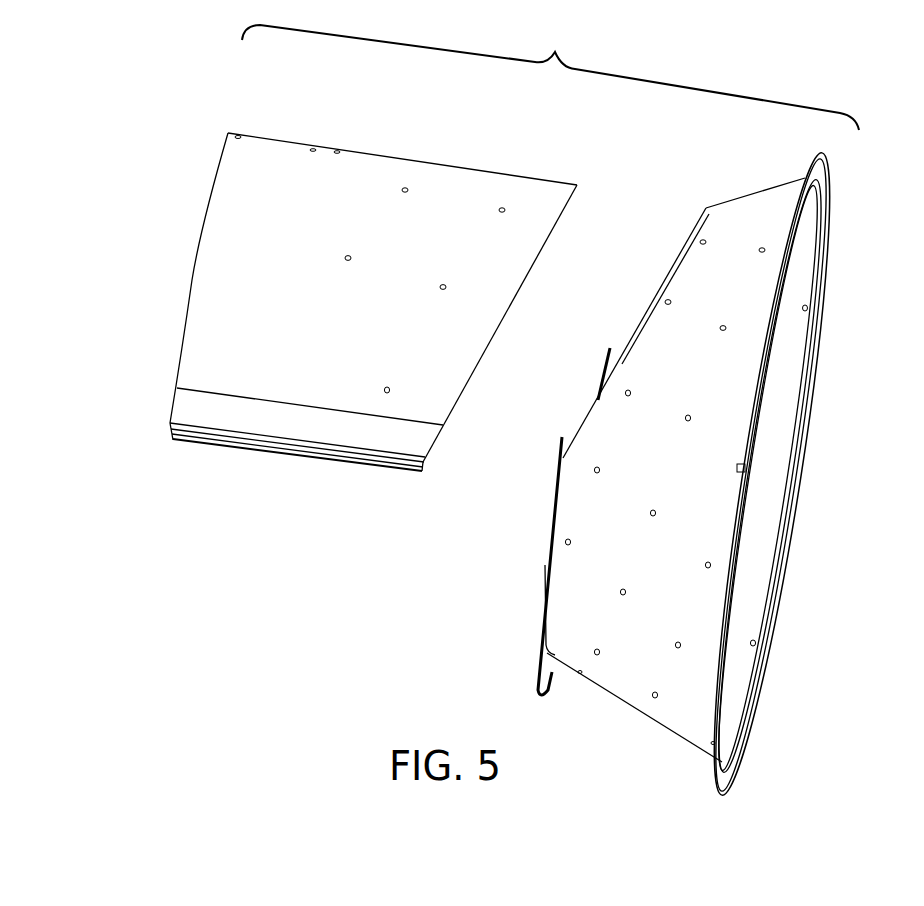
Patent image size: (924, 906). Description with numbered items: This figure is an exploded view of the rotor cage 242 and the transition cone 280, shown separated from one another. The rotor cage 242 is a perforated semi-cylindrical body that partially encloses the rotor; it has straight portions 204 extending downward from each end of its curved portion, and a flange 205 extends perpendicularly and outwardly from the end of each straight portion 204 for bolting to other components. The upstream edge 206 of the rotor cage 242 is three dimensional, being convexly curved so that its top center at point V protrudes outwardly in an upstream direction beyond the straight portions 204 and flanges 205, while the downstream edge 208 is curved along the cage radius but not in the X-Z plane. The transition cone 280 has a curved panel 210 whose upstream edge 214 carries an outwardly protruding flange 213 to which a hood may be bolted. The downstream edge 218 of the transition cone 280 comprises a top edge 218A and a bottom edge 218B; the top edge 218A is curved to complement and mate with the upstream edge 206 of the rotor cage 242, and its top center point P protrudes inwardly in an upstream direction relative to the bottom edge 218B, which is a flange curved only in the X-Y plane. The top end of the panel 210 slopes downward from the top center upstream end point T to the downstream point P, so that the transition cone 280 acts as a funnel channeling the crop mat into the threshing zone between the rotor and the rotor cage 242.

The straight portion 204 is at (413, 443).
The flange 205 is at (346, 452).
The upstream edge 206 is at (452, 415).
The downstream edge 208 is at (190, 299).
The curved panel 210 is at (617, 676).
The flange 213 is at (826, 170).
The upstream edge 214 is at (814, 367).
The downstream edge 218 is at (575, 451).
The top edge 218A is at (652, 306).
The bottom edge 218B is at (544, 567).
The rotor cage 242 is at (460, 182).
The transition cone 280 is at (749, 205).
The top center point of upstream edge V is at (577, 185).
The top center downstream end point P is at (706, 207).
The top center upstream end point T is at (805, 178).